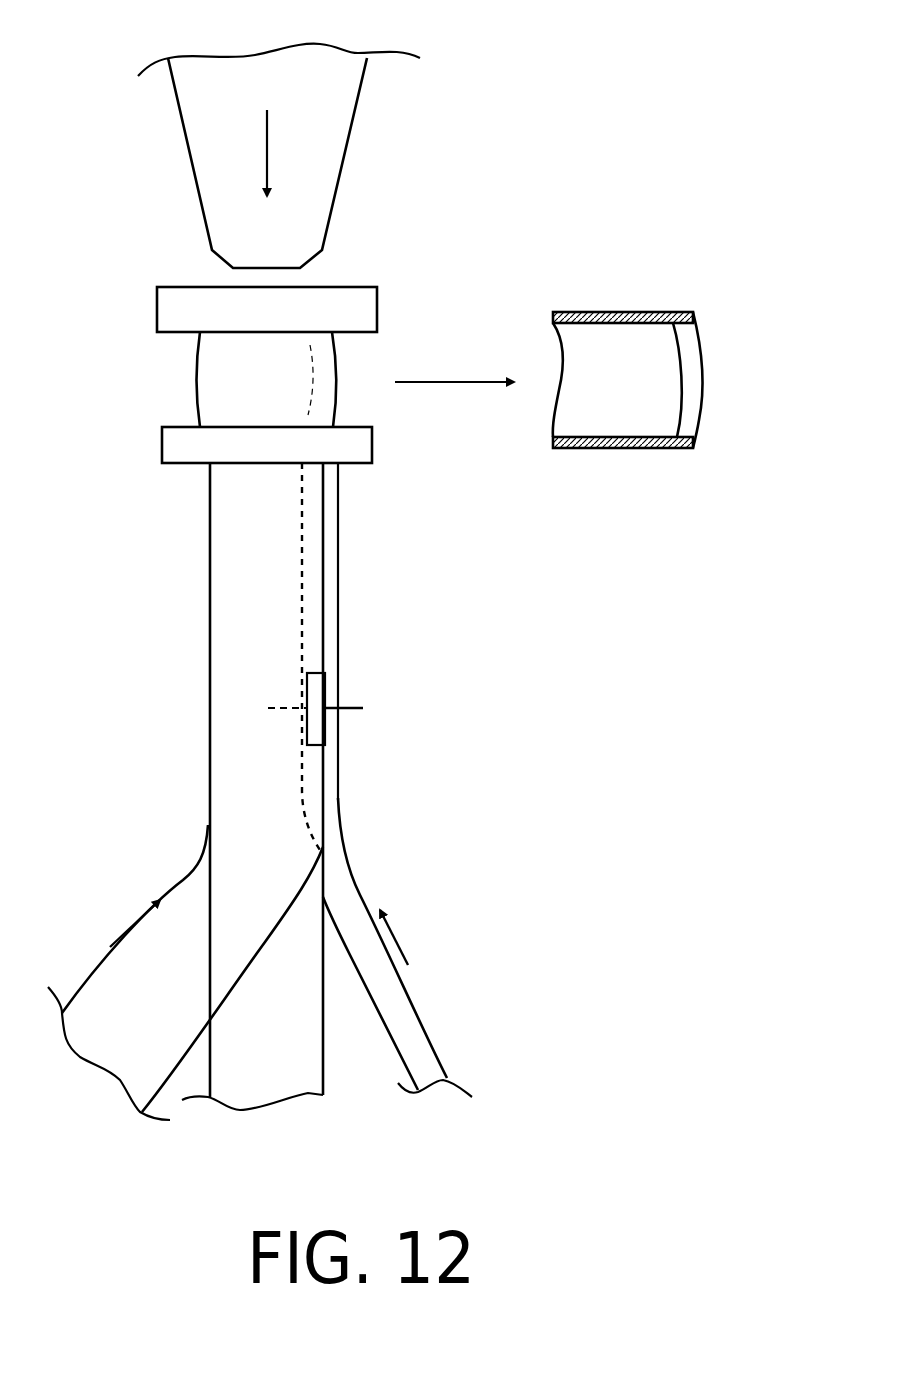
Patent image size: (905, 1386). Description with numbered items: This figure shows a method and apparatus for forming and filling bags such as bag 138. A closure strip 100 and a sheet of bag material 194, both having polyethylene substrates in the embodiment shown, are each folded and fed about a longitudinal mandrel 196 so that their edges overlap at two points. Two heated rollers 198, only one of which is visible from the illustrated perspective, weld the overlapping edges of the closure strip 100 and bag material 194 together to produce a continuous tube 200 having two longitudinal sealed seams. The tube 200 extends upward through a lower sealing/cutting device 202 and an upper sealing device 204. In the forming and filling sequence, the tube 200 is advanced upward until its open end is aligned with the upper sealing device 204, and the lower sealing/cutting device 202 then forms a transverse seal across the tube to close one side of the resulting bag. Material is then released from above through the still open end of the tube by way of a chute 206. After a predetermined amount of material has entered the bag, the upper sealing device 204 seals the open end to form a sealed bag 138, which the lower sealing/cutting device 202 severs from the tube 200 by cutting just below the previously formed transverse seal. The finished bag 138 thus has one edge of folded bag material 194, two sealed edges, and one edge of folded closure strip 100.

The chute 206 is at (187, 153).
The upper sealing device 204 is at (157, 313).
The lower sealing/cutting device 202 is at (162, 448).
The continuous tube 200 is at (208, 548).
The heated roller 198 is at (325, 702).
The longitudinal mandrel 196 is at (323, 1073).
The sheet of bag material 194 is at (185, 880).
The closure strip 100 is at (403, 987).
The bag 138 is at (655, 402).